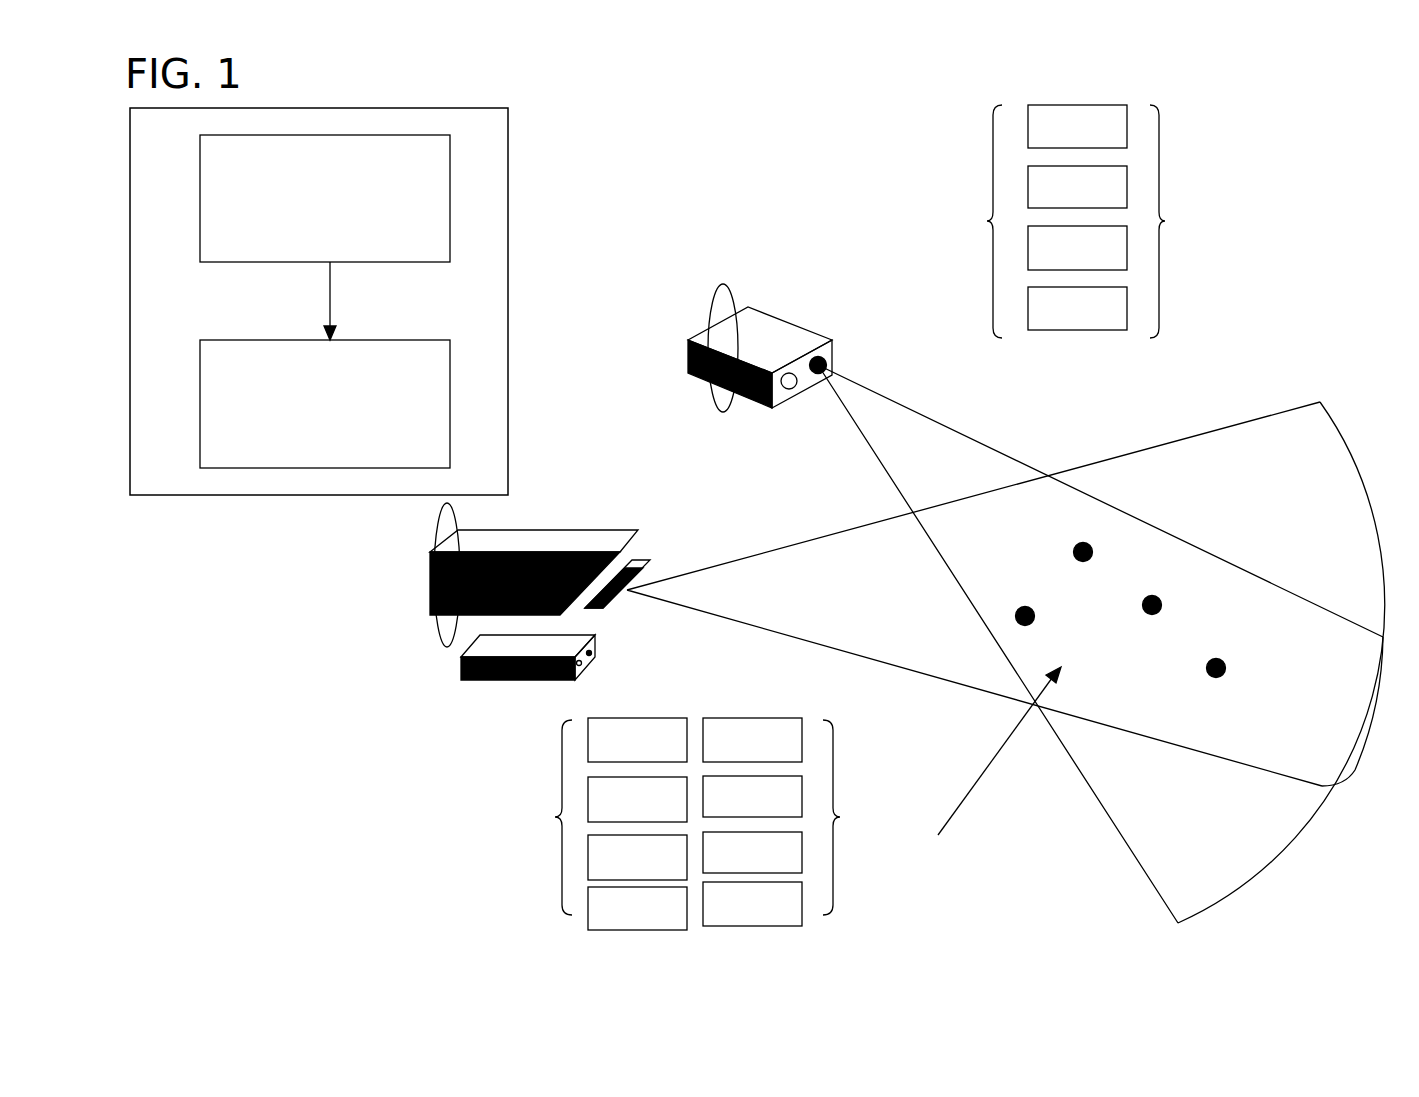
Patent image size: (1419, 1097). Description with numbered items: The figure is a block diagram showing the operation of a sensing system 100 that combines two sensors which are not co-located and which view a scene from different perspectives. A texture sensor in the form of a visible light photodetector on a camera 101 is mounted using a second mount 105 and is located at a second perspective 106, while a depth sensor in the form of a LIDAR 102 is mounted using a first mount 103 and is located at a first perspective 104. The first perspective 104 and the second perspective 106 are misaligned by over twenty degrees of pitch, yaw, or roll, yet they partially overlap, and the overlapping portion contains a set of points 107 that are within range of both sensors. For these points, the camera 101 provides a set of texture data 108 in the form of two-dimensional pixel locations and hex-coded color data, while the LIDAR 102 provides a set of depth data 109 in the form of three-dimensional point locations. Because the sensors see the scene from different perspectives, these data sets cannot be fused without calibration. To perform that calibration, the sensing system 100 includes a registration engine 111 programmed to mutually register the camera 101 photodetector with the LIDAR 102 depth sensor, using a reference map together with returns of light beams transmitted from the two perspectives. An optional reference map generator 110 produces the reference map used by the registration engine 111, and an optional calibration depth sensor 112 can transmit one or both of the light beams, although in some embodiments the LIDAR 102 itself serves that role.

The sensing system 100 is at (612, 279).
The camera 101 is at (528, 547).
The LIDAR 102 is at (765, 347).
The first mount 103 is at (720, 285).
The first perspective 104 is at (1172, 869).
The second mount 105 is at (440, 633).
The second perspective 106 is at (1283, 486).
The set of points 107 is at (975, 776).
The set of texture data 108 is at (672, 977).
The set of depth data 109 is at (1100, 382).
The reference map generator 110 is at (304, 247).
The registration engine 111 is at (304, 452).
The calibration depth sensor 112 is at (515, 682).